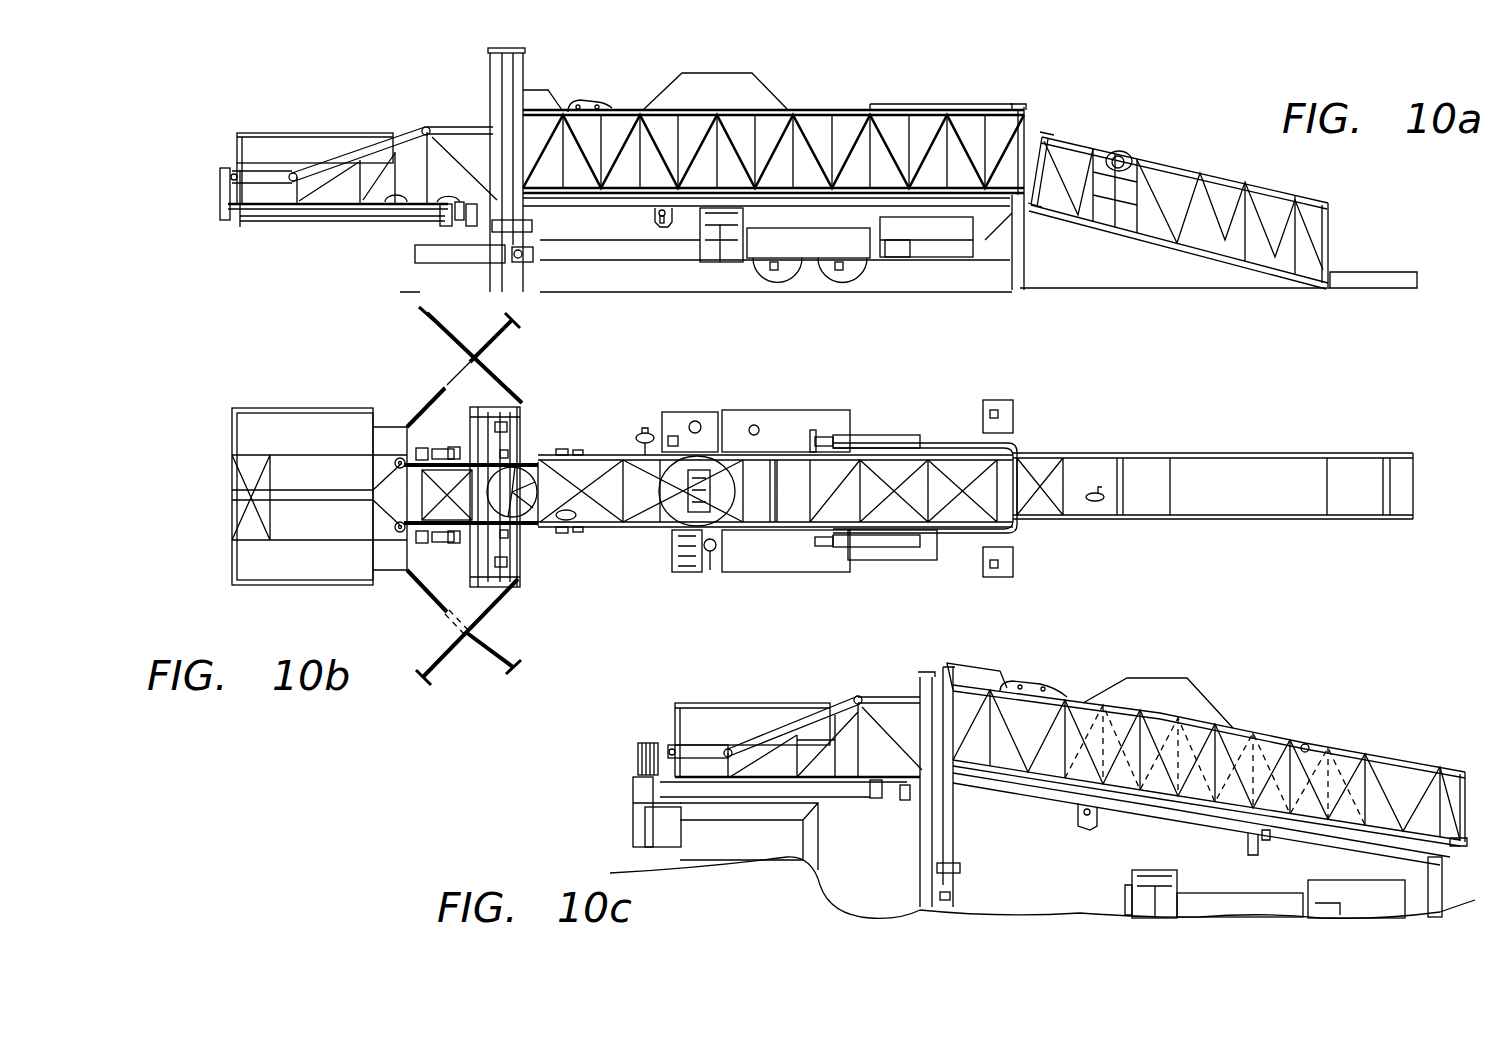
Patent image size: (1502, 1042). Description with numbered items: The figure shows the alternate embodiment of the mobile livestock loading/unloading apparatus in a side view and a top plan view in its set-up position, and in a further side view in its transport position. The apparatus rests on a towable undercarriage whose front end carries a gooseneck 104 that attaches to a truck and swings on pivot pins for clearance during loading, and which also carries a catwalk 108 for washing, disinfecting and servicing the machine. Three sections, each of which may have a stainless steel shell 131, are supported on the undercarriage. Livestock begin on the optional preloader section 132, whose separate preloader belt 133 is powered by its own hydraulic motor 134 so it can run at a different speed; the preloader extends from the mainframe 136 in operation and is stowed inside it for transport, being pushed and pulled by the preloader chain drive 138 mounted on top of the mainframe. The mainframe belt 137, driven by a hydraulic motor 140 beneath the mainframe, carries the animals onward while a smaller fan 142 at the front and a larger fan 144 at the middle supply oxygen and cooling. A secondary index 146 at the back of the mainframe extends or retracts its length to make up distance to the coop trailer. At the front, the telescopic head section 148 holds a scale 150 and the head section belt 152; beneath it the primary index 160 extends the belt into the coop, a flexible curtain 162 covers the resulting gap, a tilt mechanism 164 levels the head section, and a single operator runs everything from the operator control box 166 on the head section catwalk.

In FIG. 10b, the gooseneck 104 is at (437, 607).
In FIG. 10a, the catwalk 108 is at (315, 131).
In FIG. 10b, the catwalk 108 is at (275, 590).
In FIG. 10c, the catwalk 108 is at (752, 740).
In FIG. 10a, the stainless steel shell 131 is at (967, 118).
In FIG. 10a, the preloader section 132 is at (1060, 137).
In FIG. 10c, the preloader section 132 is at (1305, 745).
In FIG. 10a, the preloader belt 133 is at (1153, 222).
In FIG. 10b, the preloader belt 133 is at (1218, 505).
In FIG. 10a, the hydraulic motor 134 is at (1123, 152).
In FIG. 10b, the hydraulic motor 134 is at (1096, 504).
In FIG. 10a, the mainframe 136 is at (810, 109).
In FIG. 10a, the mainframe belt 137 is at (584, 186).
In FIG. 10b, the mainframe belt 137 is at (635, 517).
In FIG. 10a, the preloader chain drive 138 is at (577, 101).
In FIG. 10b, the preloader chain drive 138 is at (566, 520).
In FIG. 10a, the hydraulic motor 140 is at (647, 210).
In FIG. 10b, the hydraulic motor 140 is at (648, 432).
In FIG. 10a, the smaller fan 142 is at (540, 93).
In FIG. 10b, the smaller fan 142 is at (523, 462).
In FIG. 10c, the smaller fan 142 is at (939, 787).
In FIG. 10a, the larger fan 144 is at (772, 73).
In FIG. 10b, the larger fan 144 is at (718, 478).
In FIG. 10a, the secondary index 146 is at (889, 106).
In FIG. 10b, the secondary index 146 is at (875, 435).
In FIG. 10a, the head section 148 is at (443, 125).
In FIG. 10a, the scale 150 is at (462, 223).
In FIG. 10a, the head section belt 152 is at (410, 135).
In FIG. 10a, the primary index 160 is at (308, 232).
In FIG. 10c, the curtain 162 is at (646, 742).
In FIG. 10b, the tilt mechanism 164 is at (473, 447).
In FIG. 10a, the operator control box 166 is at (254, 178).